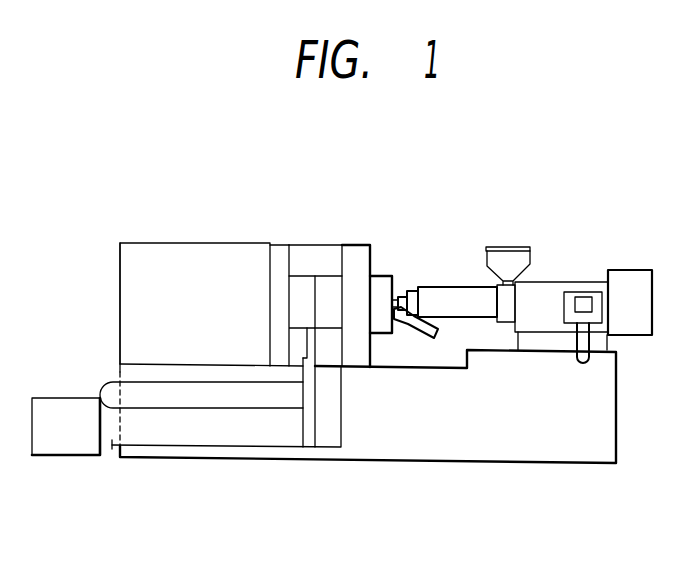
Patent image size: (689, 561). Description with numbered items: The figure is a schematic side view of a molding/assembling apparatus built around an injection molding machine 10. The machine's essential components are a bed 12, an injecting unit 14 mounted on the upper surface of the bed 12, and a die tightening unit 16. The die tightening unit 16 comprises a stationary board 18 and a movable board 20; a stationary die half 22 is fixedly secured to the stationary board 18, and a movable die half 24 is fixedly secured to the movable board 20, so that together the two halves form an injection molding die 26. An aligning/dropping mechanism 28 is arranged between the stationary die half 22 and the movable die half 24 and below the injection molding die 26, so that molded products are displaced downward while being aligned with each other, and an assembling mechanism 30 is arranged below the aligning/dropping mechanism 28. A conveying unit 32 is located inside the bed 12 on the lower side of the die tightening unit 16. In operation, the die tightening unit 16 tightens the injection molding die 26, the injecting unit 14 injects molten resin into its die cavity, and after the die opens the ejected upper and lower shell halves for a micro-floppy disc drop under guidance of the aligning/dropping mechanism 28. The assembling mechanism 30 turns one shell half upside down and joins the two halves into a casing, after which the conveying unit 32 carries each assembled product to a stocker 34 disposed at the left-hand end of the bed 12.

The injection molding machine 10 is at (580, 222).
The bed 12 is at (610, 412).
The injecting unit 14 is at (583, 279).
The die tightening unit 16 is at (173, 236).
The stationary board 18 is at (342, 250).
The movable board 20 is at (292, 258).
The stationary die half 22 is at (336, 259).
The movable die half 24 is at (310, 278).
The injection molding die 26 is at (278, 161).
The aligning/dropping mechanism 28 is at (316, 351).
The assembling mechanism 30 is at (307, 384).
The conveying unit 32 is at (195, 412).
The stocker 34 is at (65, 450).